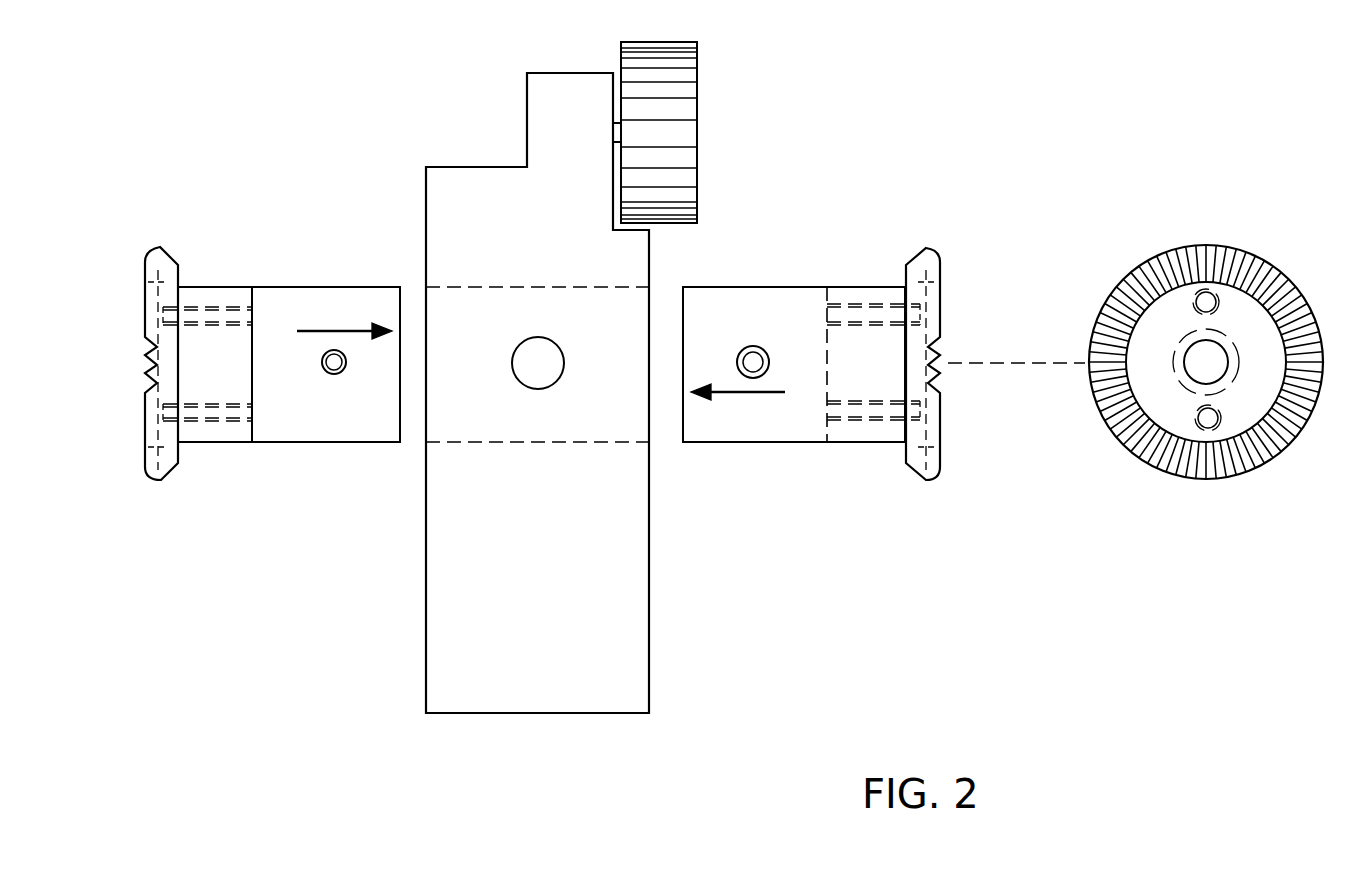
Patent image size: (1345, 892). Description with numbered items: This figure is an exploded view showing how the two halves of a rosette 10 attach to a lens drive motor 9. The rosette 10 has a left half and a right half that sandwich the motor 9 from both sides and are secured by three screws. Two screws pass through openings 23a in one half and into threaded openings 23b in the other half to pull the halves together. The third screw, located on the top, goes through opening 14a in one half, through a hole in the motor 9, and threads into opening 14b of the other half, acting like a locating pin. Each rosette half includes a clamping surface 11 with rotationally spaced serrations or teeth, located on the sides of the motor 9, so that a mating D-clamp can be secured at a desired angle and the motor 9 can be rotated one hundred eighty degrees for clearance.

The motor 9 is at (513, 722).
The rosette 10 is at (272, 464).
The clamping surface 11 is at (1120, 305).
The opening 14a is at (754, 345).
The opening 14b is at (334, 350).
The openings 23a is at (840, 410).
The threaded openings 23b is at (185, 412).